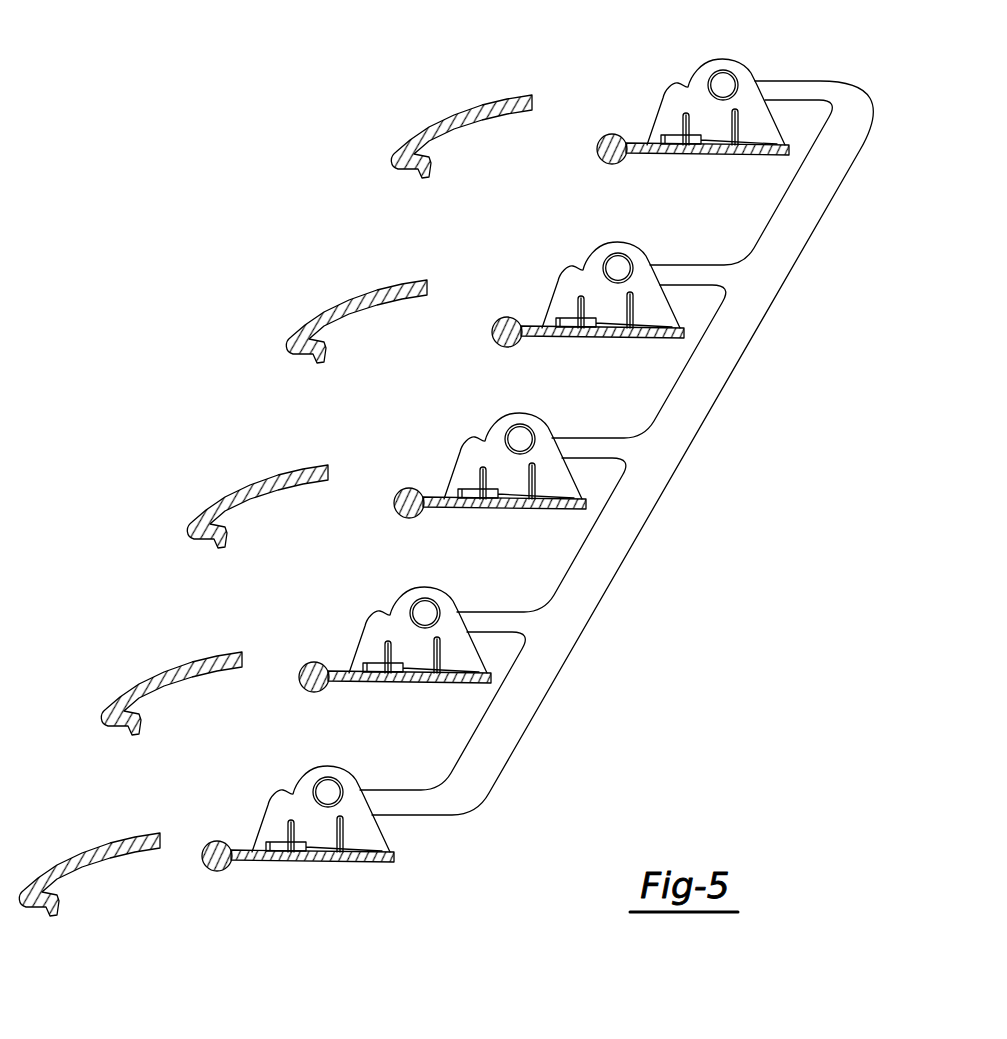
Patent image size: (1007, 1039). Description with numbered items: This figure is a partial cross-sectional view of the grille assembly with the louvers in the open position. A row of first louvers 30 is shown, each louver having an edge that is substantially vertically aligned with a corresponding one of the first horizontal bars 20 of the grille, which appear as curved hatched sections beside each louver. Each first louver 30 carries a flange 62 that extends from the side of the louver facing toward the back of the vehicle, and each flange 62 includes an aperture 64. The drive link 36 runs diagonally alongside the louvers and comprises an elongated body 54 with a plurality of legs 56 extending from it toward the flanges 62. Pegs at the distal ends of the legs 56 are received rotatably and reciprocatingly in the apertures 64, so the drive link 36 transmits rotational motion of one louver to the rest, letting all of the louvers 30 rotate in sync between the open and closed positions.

The first horizontal bars 20 is at (453, 114).
The first louvers 30 is at (668, 155).
The drive link 36 is at (712, 407).
The elongated body 54 is at (616, 419).
The legs 56 is at (778, 83).
The flange 62 is at (686, 86).
The aperture 64 is at (718, 69).